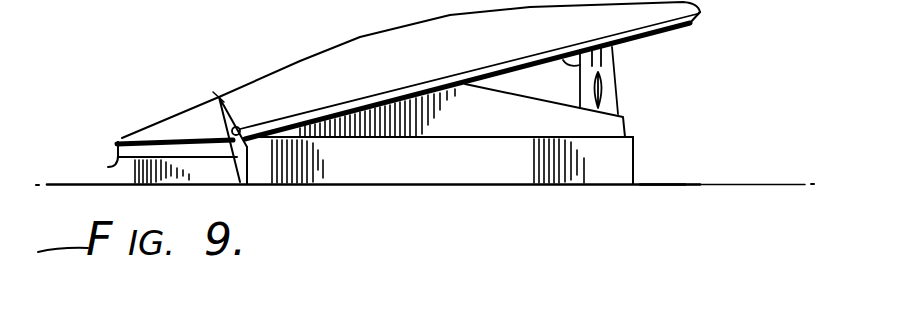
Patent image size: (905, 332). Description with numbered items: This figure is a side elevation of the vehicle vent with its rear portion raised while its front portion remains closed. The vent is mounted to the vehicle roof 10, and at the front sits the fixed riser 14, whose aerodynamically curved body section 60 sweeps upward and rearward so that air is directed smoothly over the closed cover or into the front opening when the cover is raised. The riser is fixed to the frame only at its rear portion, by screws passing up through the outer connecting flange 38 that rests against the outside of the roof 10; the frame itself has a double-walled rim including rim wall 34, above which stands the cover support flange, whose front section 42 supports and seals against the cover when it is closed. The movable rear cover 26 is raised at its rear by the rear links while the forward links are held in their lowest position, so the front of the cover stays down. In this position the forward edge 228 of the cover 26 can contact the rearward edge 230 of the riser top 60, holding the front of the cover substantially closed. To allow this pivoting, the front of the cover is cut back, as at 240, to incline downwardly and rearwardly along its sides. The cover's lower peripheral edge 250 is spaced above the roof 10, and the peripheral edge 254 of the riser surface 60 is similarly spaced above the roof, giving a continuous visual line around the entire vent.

The vehicle roof 10 is at (752, 183).
The fixed riser 14 is at (131, 131).
The lid 26 is at (347, 39).
The frame rim wall 34 is at (634, 150).
The outer connecting perimetral flange 38 is at (680, 183).
The cover support flange front section 42 is at (469, 130).
The riser body section 60 is at (161, 127).
The forward edge of cover 228 is at (219, 97).
The rearward edge of riser top 230 is at (218, 95).
The cut back 240 is at (239, 127).
The lower peripheral edge of cover 250 is at (606, 59).
The peripheral edge of riser surface 254 is at (108, 167).